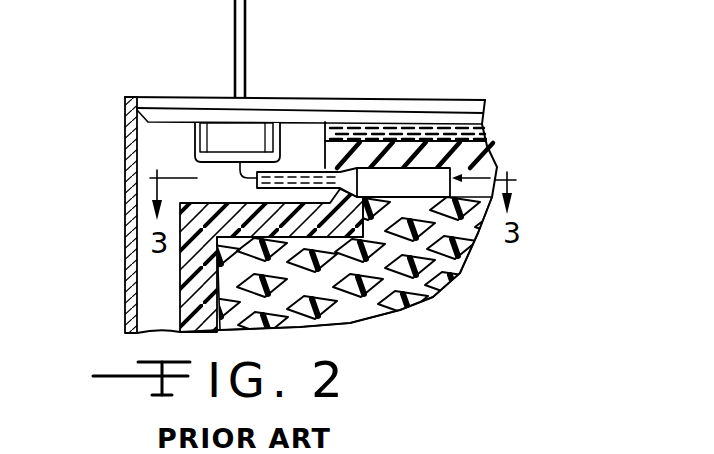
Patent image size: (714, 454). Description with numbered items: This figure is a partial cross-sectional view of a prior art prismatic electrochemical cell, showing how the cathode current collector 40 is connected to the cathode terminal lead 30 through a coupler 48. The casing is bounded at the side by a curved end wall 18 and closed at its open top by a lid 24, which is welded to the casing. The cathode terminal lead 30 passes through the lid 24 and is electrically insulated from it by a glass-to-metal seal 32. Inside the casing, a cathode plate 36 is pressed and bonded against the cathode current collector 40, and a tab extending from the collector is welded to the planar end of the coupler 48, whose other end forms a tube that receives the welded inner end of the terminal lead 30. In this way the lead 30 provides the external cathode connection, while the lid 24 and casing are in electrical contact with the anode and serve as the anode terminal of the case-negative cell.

The curved end wall 18 is at (125, 166).
The lid 24 is at (373, 98).
The cathode terminal lead 30 is at (247, 28).
The glass-to-metal seal 32 is at (188, 138).
The cathode plate 36 is at (487, 149).
The cathode current collector 40 is at (478, 263).
The coupler 48 is at (293, 172).